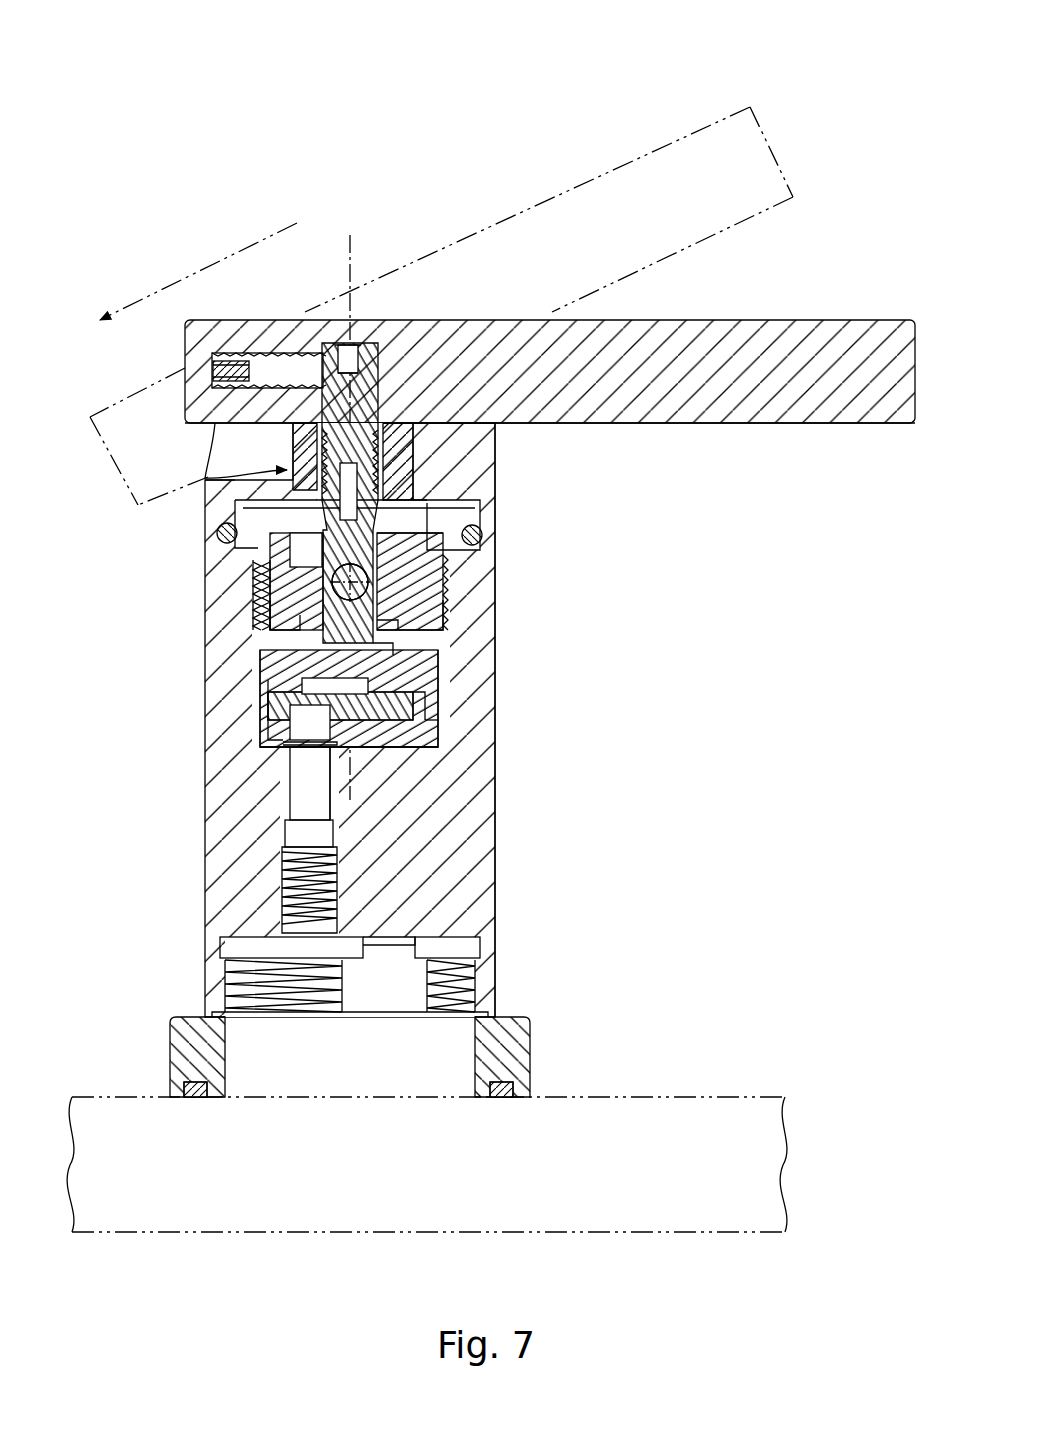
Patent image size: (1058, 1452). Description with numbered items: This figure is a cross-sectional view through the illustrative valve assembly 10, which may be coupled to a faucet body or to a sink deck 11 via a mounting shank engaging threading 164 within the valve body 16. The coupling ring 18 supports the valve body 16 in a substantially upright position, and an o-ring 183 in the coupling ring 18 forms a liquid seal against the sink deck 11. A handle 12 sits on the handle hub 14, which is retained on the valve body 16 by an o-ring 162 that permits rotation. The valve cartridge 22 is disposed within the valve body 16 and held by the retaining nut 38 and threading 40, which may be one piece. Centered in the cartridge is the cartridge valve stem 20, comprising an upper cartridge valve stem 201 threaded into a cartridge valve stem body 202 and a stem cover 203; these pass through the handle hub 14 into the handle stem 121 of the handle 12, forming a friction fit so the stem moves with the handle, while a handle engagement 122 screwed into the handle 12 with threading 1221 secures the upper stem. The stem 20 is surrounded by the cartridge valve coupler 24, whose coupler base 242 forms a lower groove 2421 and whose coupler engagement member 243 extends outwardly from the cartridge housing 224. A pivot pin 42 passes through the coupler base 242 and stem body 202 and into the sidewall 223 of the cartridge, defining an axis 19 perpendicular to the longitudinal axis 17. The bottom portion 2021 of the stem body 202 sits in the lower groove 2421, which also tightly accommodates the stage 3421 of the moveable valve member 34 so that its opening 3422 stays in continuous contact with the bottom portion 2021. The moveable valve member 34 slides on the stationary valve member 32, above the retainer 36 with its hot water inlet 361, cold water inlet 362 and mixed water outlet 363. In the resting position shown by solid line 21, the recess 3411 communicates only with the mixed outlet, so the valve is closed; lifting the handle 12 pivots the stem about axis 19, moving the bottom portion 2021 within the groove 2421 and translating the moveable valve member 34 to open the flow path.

The valve assembly 10 is at (262, 130).
The sink deck 11 is at (220, 1237).
The handle 12 is at (862, 318).
The handle hub 14 is at (498, 472).
The valve body 16 is at (650, 745).
The longitudinal axis 17 is at (350, 245).
The coupling ring 18 is at (165, 1042).
The axis 19 is at (260, 580).
The cartridge valve stem 20 is at (413, 423).
The solid line 21 is at (790, 425).
The valve cartridge 22 is at (457, 623).
The cartridge valve coupler 24 is at (443, 565).
The stationary valve member 32 is at (335, 686).
The moveable valve member 34 is at (296, 660).
The retainer 36 is at (425, 760).
The retaining nut 38 is at (217, 538).
The threading 40 is at (452, 620).
The pivot pin 42 is at (332, 585).
The handle stem 121 is at (125, 490).
The handle engagement 122 is at (250, 350).
The o-ring 162 is at (484, 536).
The threading 164 is at (240, 985).
The o-ring 183 is at (505, 1110).
The upper cartridge valve stem 201 is at (373, 347).
The cartridge valve stem body 202 is at (400, 495).
The stem cover 203 is at (310, 452).
The sidewall 223 is at (430, 740).
The cartridge housing 224 is at (440, 740).
The coupler base 242 is at (455, 605).
The coupler engagement member 243 is at (300, 540).
The hot water inlet 361 is at (400, 750).
The cold water inlet 362 is at (425, 800).
The mixed water outlet 363 is at (290, 818).
The threading 1221 is at (289, 352).
The bottom portion 2021 is at (340, 515).
The lower groove 2421 is at (383, 655).
The recess 3411 is at (300, 745).
The stage 3421 is at (410, 700).
The opening 3422 is at (275, 705).